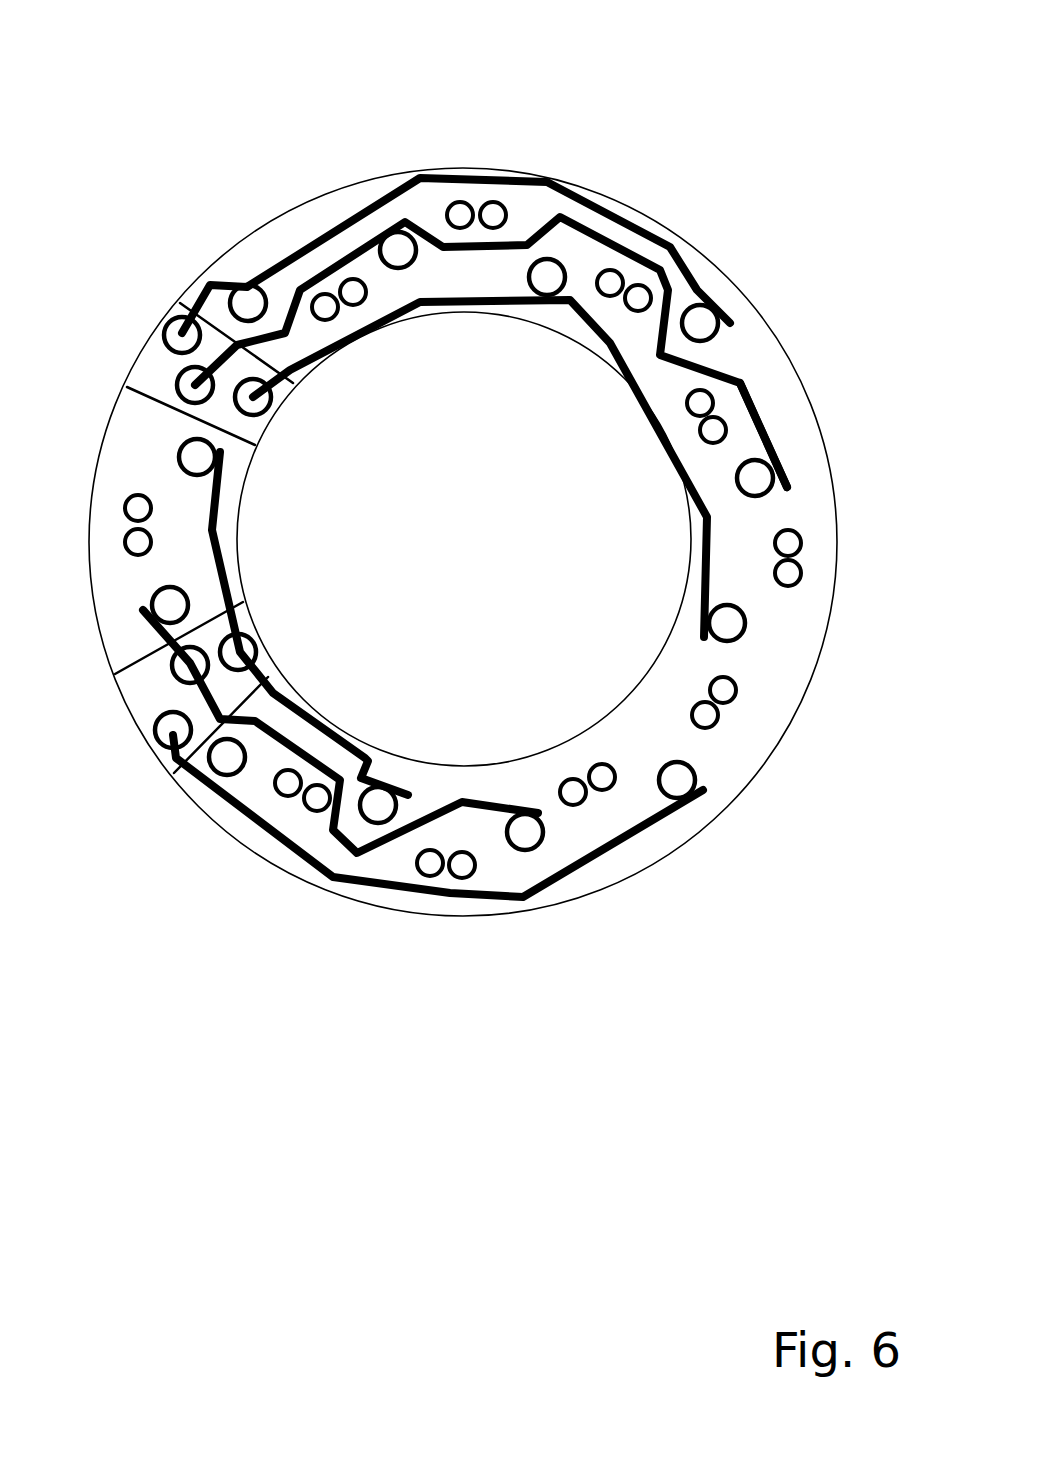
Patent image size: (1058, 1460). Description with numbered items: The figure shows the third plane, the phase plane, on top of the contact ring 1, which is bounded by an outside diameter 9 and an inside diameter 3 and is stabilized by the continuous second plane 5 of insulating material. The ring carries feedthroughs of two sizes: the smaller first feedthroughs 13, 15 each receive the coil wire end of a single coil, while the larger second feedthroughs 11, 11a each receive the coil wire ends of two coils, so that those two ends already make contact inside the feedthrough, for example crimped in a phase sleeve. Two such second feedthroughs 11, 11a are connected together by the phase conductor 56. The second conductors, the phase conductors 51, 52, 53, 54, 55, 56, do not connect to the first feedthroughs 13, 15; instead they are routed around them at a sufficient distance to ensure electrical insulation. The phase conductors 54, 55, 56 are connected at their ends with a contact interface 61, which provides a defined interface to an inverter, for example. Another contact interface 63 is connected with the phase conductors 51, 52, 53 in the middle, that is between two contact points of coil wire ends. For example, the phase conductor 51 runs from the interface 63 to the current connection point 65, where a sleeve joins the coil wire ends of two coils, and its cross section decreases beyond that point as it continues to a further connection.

The contact ring 1 is at (508, 60).
The inside diameter 3 is at (580, 742).
The second plane 5 is at (655, 742).
The outside diameter 9 is at (737, 800).
The second feedthrough 11 is at (248, 300).
The second feedthrough 11a is at (700, 320).
The first feedthrough 13 is at (636, 296).
The first feedthrough 15 is at (610, 283).
The phase conductor 51 is at (397, 893).
The phase conductor 52 is at (498, 803).
The phase conductor 53 is at (224, 542).
The phase conductor 54 is at (490, 303).
The phase conductor 55 is at (710, 363).
The phase conductor 56 is at (337, 215).
The contact interface 61 is at (122, 338).
The contact interface 63 is at (123, 737).
The current connection point 65 is at (258, 652).